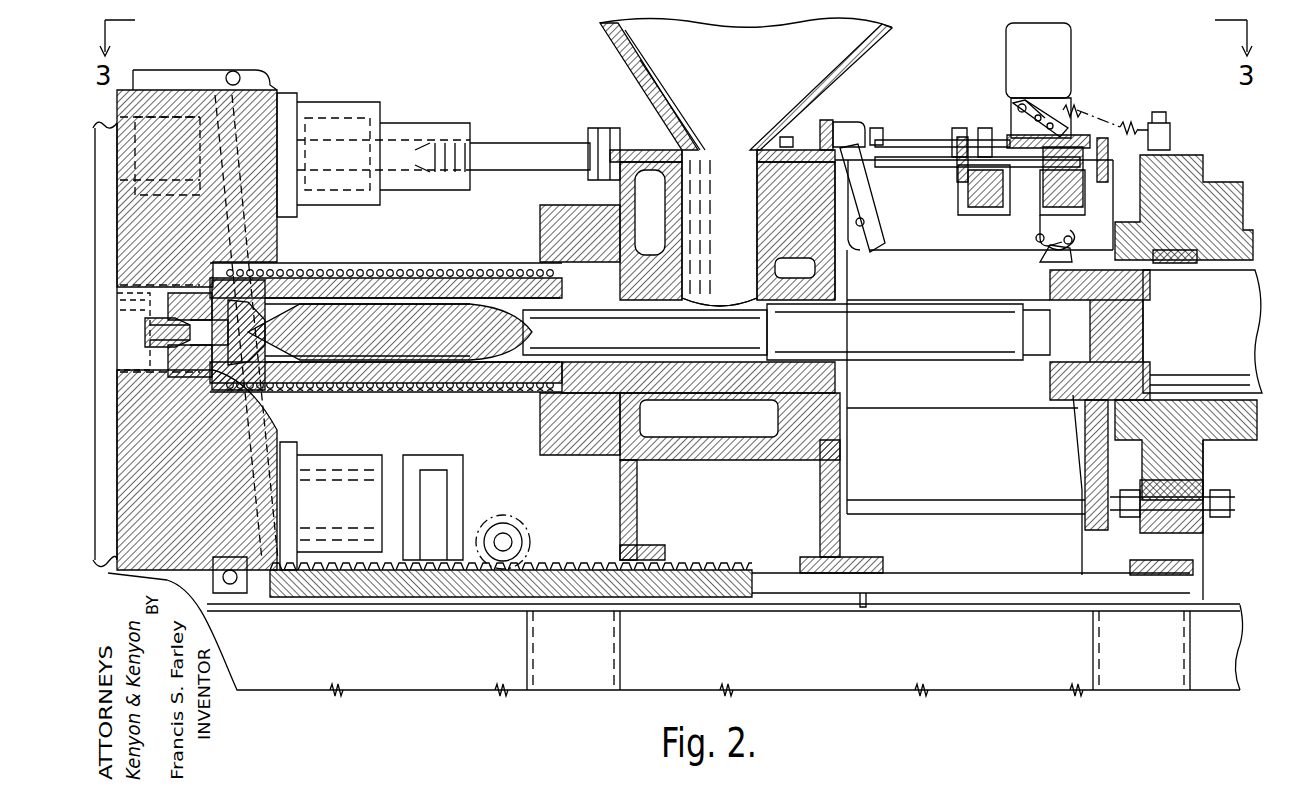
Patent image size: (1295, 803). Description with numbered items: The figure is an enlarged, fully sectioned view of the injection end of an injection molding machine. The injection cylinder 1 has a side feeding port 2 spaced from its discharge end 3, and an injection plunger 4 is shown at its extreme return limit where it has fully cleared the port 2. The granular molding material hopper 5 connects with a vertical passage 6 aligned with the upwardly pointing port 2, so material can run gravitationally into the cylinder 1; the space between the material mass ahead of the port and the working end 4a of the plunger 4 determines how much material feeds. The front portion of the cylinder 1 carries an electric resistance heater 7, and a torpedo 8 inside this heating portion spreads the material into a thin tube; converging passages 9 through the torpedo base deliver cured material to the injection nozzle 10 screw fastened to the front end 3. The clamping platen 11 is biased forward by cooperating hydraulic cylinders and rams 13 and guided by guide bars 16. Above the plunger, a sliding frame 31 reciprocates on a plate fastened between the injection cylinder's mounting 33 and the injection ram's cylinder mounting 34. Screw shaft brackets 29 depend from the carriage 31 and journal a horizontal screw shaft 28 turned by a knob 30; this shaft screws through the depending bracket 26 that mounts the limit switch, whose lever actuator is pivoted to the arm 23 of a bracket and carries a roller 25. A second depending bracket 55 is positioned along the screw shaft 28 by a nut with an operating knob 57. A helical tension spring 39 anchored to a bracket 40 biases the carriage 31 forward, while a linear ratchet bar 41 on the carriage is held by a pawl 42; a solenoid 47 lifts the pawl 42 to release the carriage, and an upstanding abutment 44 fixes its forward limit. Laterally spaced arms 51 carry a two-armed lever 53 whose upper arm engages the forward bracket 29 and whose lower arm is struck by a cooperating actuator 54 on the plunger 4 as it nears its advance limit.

The injection cylinder 1 is at (395, 278).
The side feeding port 2 is at (715, 302).
The discharge end 3 is at (208, 380).
The injection plunger 4 is at (905, 350).
The working end of the plunger 4a is at (768, 335).
The granular molding material hopper 5 is at (622, 62).
The vertical passage 6 is at (688, 218).
The electric resistance heater 7 is at (350, 385).
The torpedo 8 is at (430, 360).
The converging passages 9 is at (256, 298).
The injection nozzle 10 is at (165, 300).
The clamping platen 11 is at (128, 90).
The hydraulic cylinders and rams 13 is at (363, 102).
The guide bars 16 is at (108, 122).
The arm of bracket 23 is at (1040, 225).
The roller 25 is at (1070, 244).
The depending bracket 26 is at (1043, 177).
The screw shaft 28 is at (928, 167).
The screw shaft brackets 29 is at (880, 167).
The knob 30 is at (1108, 170).
The sliding frame 31 is at (878, 135).
The injection cylinder's mounting 33 is at (818, 147).
The injection ram's cylinder mounting 34 is at (1200, 160).
The helical tension spring 39 is at (1103, 112).
The bracket 40 is at (1160, 122).
The linear ratchet bar 41 is at (1013, 125).
The pawl 42 is at (1013, 108).
The upstanding abutment 44 is at (852, 122).
The solenoid 47 is at (1073, 50).
The laterally spaced arms 51 is at (878, 206).
The two-armed lever 53 is at (880, 243).
The cooperating actuator 54 is at (1058, 262).
The second depending bracket 55 is at (980, 207).
The operating knob 57 is at (1010, 142).